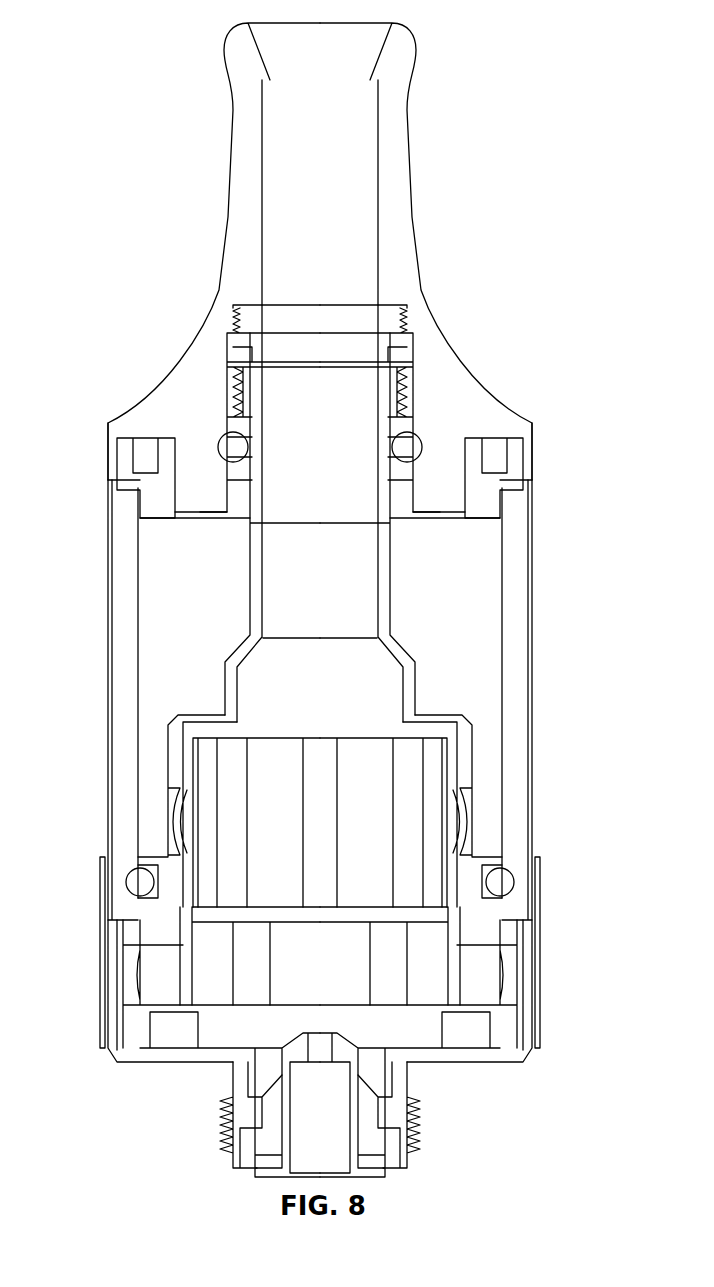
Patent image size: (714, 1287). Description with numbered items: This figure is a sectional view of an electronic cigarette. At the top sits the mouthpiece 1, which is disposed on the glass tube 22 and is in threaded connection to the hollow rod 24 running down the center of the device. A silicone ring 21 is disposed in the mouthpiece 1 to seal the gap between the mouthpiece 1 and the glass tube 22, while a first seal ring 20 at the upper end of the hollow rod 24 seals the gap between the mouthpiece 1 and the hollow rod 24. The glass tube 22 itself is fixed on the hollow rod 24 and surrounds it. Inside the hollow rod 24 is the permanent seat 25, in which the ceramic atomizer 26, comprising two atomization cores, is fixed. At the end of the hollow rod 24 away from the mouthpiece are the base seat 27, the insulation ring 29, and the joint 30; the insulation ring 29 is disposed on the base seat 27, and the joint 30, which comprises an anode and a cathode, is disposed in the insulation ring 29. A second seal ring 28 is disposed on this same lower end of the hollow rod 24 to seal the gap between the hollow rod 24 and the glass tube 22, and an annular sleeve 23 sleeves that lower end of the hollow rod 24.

The mouthpiece 1 is at (395, 232).
The first seal ring 20 is at (423, 448).
The silicone ring 21 is at (488, 485).
The glass tube 22 is at (513, 846).
The annular sleeve 23 is at (537, 950).
The hollow rod 24 is at (385, 588).
The permanent seat 25 is at (450, 755).
The ceramic atomizer 26 is at (230, 793).
The base seat 27 is at (488, 1057).
The second seal ring 28 is at (143, 879).
The insulation ring 29 is at (367, 1127).
The joint 30 is at (285, 1110).